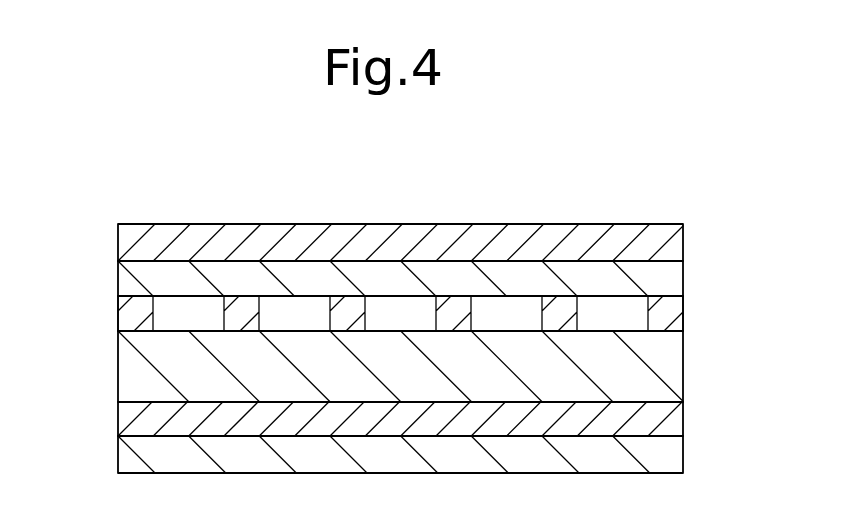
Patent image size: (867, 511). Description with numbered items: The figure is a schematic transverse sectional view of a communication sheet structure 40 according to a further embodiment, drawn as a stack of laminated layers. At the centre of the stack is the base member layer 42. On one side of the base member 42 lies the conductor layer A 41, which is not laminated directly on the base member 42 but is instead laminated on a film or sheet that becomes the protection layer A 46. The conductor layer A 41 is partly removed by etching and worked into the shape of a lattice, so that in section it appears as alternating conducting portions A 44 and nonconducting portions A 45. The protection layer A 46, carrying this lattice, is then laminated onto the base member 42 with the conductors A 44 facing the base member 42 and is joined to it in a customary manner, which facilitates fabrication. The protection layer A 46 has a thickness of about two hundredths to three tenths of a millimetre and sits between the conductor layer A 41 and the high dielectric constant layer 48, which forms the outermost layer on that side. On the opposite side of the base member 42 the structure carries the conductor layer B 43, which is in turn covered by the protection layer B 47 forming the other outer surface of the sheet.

The communication sheet structure 40 is at (437, 200).
The conductor layer A 41 is at (391, 251).
The base member layer 42 is at (683, 362).
The conductor layer B 43 is at (683, 415).
The conducting portion A 44 is at (132, 310).
The nonconducting portion A 45 is at (195, 315).
The protection layer A 46 is at (683, 270).
The protection layer B 47 is at (683, 452).
The high dielectric constant layer 48 is at (683, 235).